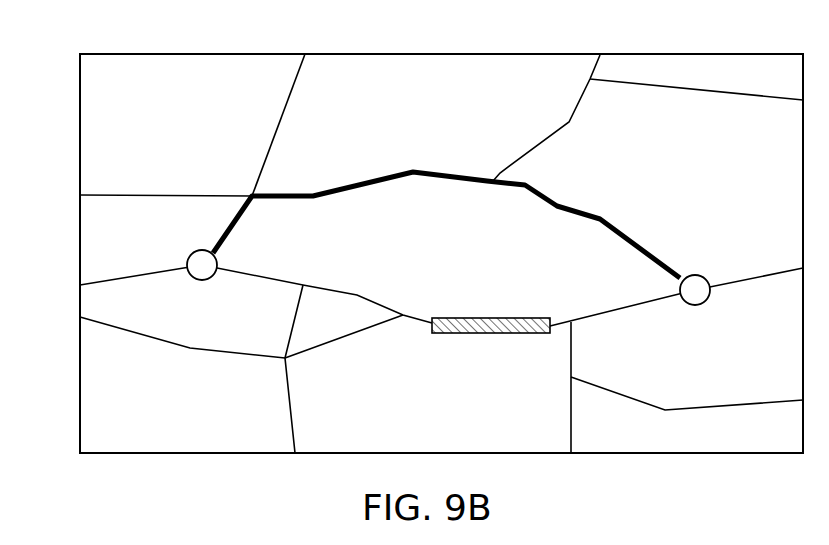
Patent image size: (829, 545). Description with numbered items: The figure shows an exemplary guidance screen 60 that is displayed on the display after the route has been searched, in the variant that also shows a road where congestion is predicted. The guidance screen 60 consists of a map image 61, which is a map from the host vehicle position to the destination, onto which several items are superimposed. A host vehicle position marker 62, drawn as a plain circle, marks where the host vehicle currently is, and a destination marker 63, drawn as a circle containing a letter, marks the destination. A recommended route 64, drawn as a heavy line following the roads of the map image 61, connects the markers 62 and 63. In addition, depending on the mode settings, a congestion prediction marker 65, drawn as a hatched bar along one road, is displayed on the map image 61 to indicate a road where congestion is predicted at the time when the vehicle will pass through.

The guidance screen 60 is at (80, 111).
The map image 61 is at (512, 68).
The host vehicle position marker 62 is at (190, 252).
The destination marker 63 is at (693, 274).
The recommended route 64 is at (376, 181).
The congestion prediction marker 65 is at (495, 317).